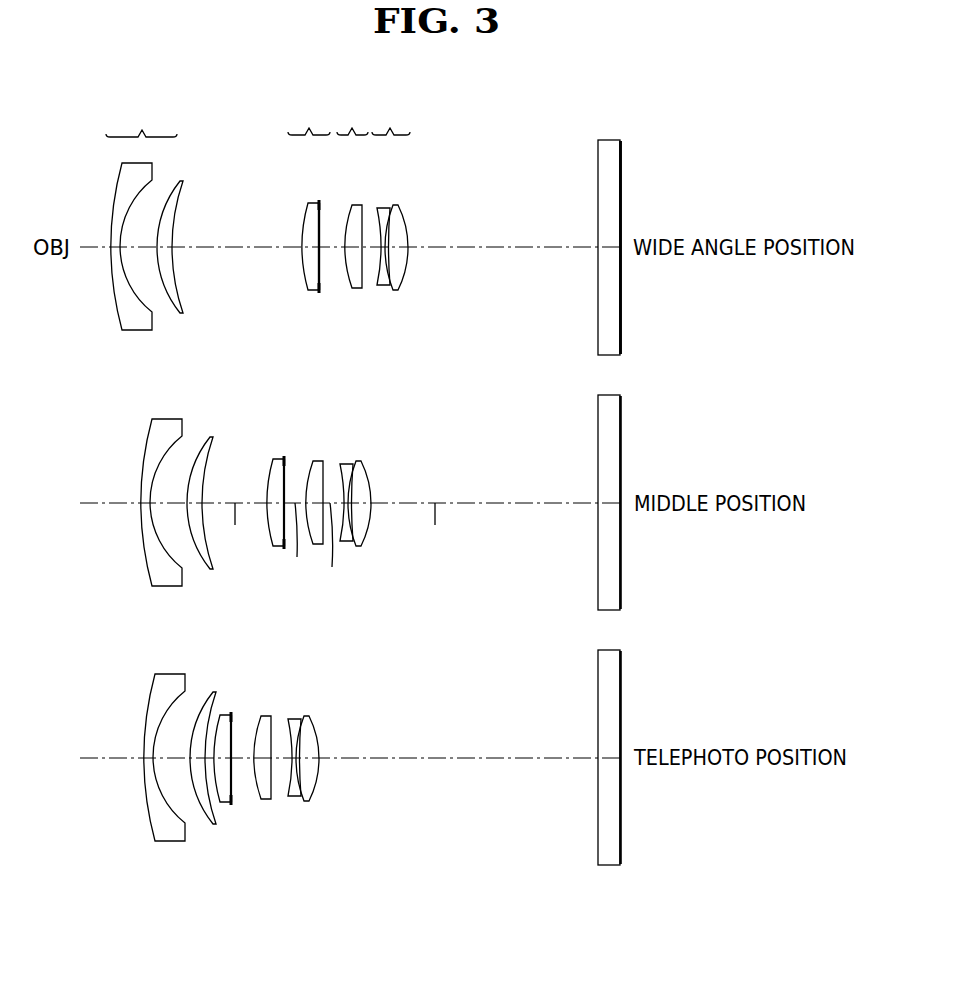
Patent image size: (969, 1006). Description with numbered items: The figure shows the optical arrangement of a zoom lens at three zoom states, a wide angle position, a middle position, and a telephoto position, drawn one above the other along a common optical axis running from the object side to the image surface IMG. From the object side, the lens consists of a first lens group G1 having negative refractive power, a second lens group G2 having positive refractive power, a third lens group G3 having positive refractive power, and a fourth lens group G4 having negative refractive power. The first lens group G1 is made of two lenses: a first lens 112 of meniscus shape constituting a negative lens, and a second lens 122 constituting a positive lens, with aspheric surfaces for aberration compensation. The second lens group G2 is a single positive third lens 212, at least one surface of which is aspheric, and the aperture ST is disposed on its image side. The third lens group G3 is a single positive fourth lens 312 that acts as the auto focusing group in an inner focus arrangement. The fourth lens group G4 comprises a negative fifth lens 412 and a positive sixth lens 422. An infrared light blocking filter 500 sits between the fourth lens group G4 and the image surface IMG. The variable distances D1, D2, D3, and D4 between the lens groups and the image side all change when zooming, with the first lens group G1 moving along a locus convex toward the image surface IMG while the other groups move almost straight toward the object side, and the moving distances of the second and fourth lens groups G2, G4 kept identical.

The first lens 112 is at (137, 323).
The second lens 122 is at (181, 313).
The third lens 212 is at (308, 290).
The fourth lens 312 is at (353, 290).
The fifth lens 412 is at (385, 287).
The sixth lens 422 is at (405, 270).
The infrared light blocking filter 500 is at (599, 332).
The aperture ST is at (320, 205).
The image surface IMG is at (621, 155).
The first lens group G1 is at (141, 119).
The second lens group G2 is at (309, 118).
The third lens group G3 is at (352, 118).
The fourth lens group G4 is at (391, 118).
The variable distance D1 is at (234, 529).
The variable distance D2 is at (295, 545).
The variable distance D3 is at (331, 550).
The variable distance D4 is at (437, 529).